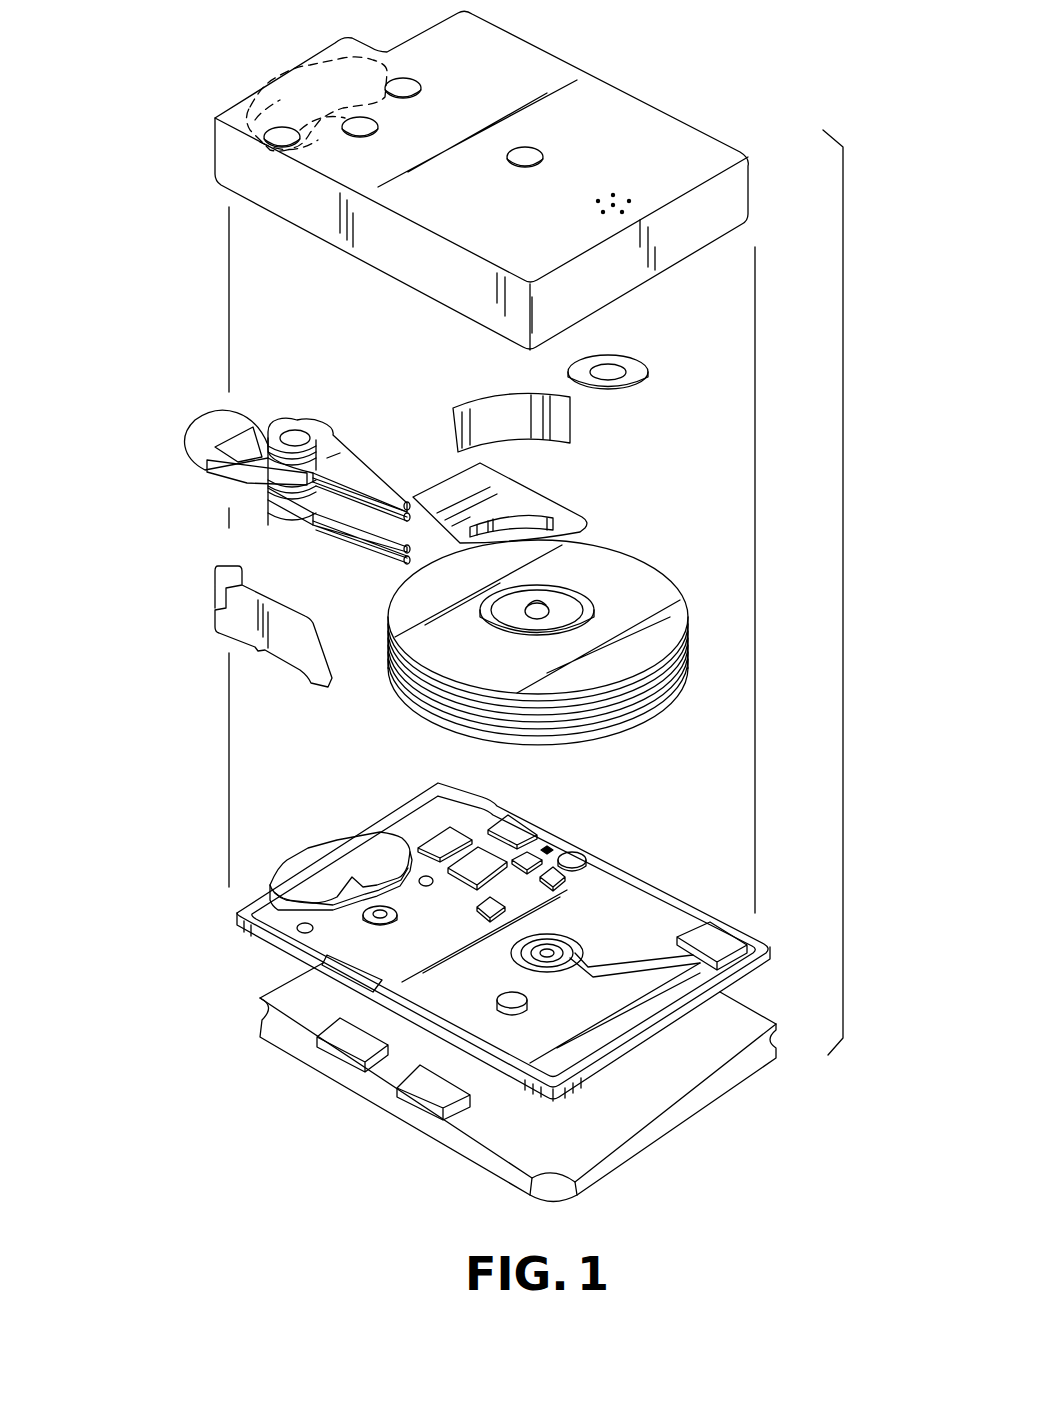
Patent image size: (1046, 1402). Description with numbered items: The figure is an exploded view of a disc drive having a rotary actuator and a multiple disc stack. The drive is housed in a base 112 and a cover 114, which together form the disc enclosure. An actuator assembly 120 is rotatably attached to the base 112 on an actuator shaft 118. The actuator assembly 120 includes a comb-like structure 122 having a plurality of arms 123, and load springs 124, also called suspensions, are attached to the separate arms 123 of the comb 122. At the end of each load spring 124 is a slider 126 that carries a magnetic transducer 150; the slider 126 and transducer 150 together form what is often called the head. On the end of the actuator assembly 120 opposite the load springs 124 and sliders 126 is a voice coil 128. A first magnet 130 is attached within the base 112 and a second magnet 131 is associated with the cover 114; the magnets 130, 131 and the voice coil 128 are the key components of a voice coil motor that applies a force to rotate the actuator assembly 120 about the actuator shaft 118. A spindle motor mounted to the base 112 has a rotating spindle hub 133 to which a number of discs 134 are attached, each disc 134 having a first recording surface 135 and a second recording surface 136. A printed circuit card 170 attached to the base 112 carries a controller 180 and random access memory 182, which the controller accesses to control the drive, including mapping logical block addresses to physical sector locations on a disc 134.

The base 112 is at (663, 910).
The cover 114 is at (637, 118).
The actuator shaft 118 is at (298, 432).
The actuator assembly 120 is at (247, 483).
The comb-like structure 122 is at (318, 533).
The arms 123 is at (350, 437).
The load springs 124 is at (365, 473).
The slider 126 is at (405, 503).
The voice coil 128 is at (207, 437).
The first magnet 130 is at (318, 70).
The second magnet 131 is at (298, 873).
The spindle hub 133 is at (540, 607).
The discs 134 is at (657, 587).
The first recording surface 135 is at (663, 627).
The second recording surface 136 is at (643, 675).
The magnetic transducer 150 is at (413, 503).
The printed circuit card 170 is at (677, 1127).
The controller 180 is at (347, 1040).
The random access memory 182 is at (428, 1087).